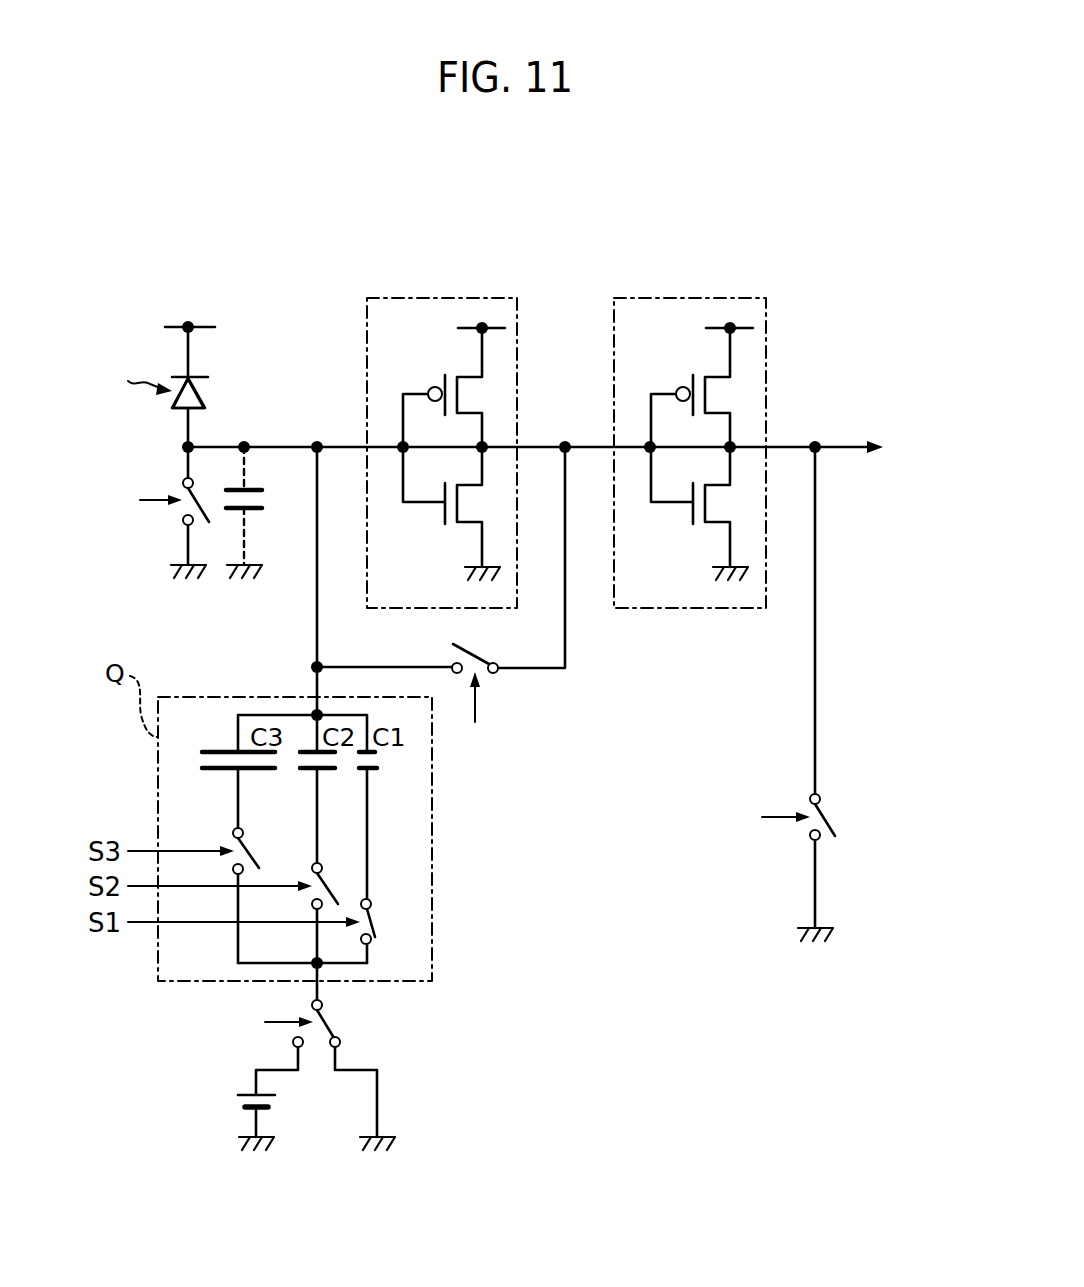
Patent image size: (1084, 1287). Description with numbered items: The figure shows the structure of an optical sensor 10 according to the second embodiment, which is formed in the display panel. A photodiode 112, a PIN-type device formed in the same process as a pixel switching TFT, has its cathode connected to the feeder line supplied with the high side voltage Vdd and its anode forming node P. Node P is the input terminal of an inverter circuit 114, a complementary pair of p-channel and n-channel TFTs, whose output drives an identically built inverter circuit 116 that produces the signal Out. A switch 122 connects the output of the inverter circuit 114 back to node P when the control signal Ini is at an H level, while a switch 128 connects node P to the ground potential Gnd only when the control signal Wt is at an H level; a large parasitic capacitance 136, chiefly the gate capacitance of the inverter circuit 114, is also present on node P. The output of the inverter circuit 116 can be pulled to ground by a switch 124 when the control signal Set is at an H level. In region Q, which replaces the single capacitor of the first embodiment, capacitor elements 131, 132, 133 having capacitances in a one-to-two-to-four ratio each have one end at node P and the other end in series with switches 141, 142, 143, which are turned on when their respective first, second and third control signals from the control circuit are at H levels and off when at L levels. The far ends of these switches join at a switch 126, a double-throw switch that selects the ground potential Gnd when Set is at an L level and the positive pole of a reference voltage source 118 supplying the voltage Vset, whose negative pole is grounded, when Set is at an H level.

The optical sensor 10 is at (398, 221).
The photodiode 112 is at (177, 411).
The inverter circuit 114 is at (480, 298).
The inverter circuit 116 is at (728, 298).
The reference voltage source 118 is at (238, 1096).
The switch 122 is at (488, 679).
The switch 124 is at (826, 820).
The switch 126 is at (328, 1023).
The switch 128 is at (177, 519).
The capacitor element 131 is at (372, 770).
The capacitor element 132 is at (313, 770).
The capacitor element 133 is at (232, 770).
The parasitic capacitance 136 is at (256, 512).
The switch 141 is at (372, 899).
The switch 142 is at (309, 867).
The switch 143 is at (234, 837).